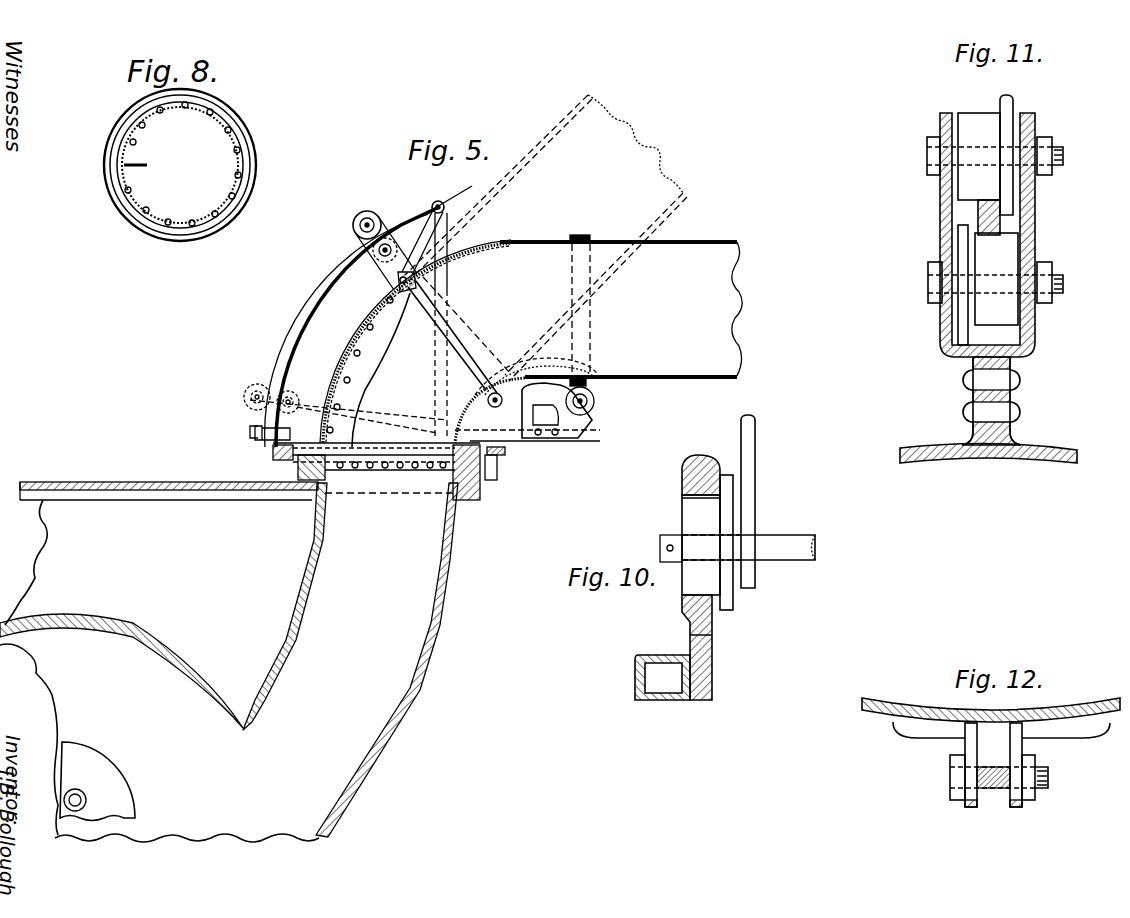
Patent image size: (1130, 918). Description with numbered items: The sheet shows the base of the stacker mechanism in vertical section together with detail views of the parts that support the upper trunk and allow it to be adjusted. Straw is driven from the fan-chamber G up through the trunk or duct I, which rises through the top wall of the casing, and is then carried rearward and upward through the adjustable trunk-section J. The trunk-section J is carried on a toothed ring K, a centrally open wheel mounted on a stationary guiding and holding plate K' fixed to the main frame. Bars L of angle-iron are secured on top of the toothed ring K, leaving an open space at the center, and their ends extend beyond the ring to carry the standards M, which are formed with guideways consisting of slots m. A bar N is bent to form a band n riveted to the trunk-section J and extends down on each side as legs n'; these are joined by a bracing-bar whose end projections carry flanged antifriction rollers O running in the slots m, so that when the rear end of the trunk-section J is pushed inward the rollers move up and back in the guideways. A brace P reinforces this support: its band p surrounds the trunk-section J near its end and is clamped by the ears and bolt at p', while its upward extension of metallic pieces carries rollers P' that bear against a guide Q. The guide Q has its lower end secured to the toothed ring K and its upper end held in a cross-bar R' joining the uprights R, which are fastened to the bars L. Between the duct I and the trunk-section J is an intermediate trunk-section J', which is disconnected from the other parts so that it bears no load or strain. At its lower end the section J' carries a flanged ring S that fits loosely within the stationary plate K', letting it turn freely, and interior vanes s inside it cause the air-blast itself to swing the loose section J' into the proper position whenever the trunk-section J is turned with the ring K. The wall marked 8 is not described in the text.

In FIG. 8, the flanged ring S is at (248, 148).
In FIG. 5, the flanged ring S is at (458, 485).
In FIG. 8, the interior vane s is at (147, 165).
In FIG. 8, the intermediate trunk-section J' is at (200, 165).
In FIG. 5, the intermediate trunk-section J' is at (415, 343).
In FIG. 5, the adjustable trunk-section J is at (598, 342).
In FIG. 11, the adjustable trunk-section J is at (983, 482).
In FIG. 12, the adjustable trunk-section J is at (991, 689).
In FIG. 5, the bar N is at (580, 309).
In FIG. 10, the bar N is at (756, 418).
In FIG. 5, the band n is at (588, 227).
In FIG. 5, the legs n' is at (608, 364).
In FIG. 10, the legs n' is at (770, 458).
In FIG. 5, the wall 8 is at (364, 385).
In FIG. 5, the guide Q is at (332, 293).
In FIG. 11, the guide Q is at (1003, 230).
In FIG. 5, the antifriction wheels or rollers P' is at (384, 234).
In FIG. 11, the antifriction wheels or rollers P' is at (995, 208).
In FIG. 5, the cross-bar R' is at (431, 306).
In FIG. 5, the uprights R is at (382, 308).
In FIG. 5, the band p is at (385, 287).
In FIG. 11, the band p is at (982, 410).
In FIG. 12, the band p is at (995, 733).
In FIG. 5, the brace P is at (459, 335).
In FIG. 5, the guiding and holding plate K' is at (283, 453).
In FIG. 5, the toothed ring K is at (494, 472).
In FIG. 5, the bars L is at (548, 445).
In FIG. 10, the bars L is at (632, 675).
In FIG. 5, the slots m is at (585, 440).
In FIG. 5, the antifriction wheels or rollers O is at (594, 400).
In FIG. 10, the antifriction wheels or rollers O is at (694, 515).
In FIG. 5, the standards M is at (585, 425).
In FIG. 10, the standards M is at (680, 478).
In FIG. 5, the trunk or duct I is at (350, 660).
In FIG. 5, the fan-chamber G is at (203, 682).
In FIG. 12, the ears and bolt p' is at (999, 765).